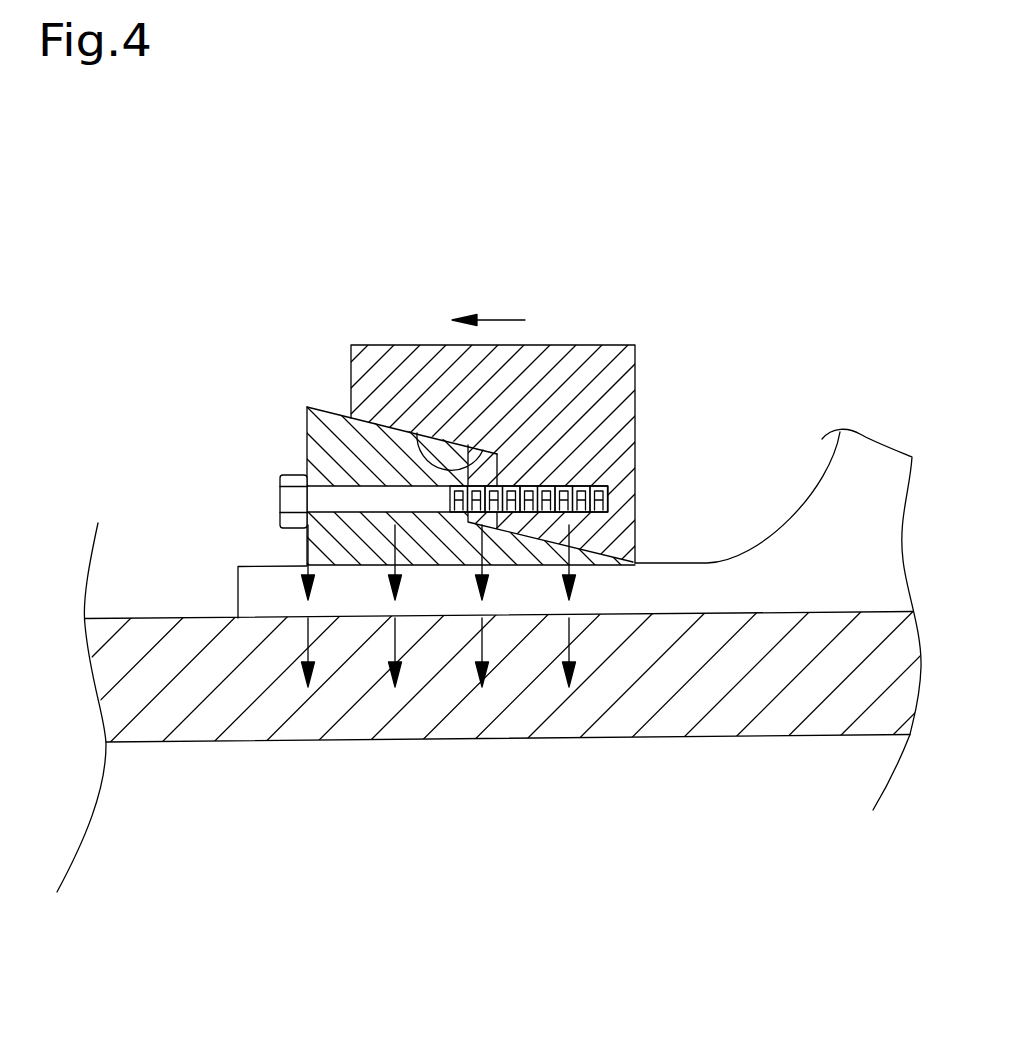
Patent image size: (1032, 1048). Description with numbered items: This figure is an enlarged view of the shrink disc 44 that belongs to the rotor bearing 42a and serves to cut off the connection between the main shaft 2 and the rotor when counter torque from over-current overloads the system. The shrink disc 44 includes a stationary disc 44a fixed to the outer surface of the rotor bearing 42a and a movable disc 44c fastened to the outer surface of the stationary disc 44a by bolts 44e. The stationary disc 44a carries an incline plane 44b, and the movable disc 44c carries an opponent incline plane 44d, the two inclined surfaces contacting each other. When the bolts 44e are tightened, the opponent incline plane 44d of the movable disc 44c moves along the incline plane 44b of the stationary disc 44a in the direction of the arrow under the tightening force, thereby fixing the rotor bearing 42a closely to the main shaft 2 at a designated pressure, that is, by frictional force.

The main shaft 2 is at (710, 703).
The rotor bearing 42a is at (623, 598).
The shrink disc 44 is at (466, 436).
The stationary disc 44a is at (320, 443).
The incline plane 44b is at (332, 410).
The movable disc 44c is at (600, 383).
The opponent incline plane 44d is at (428, 434).
The bolts 44e is at (608, 497).